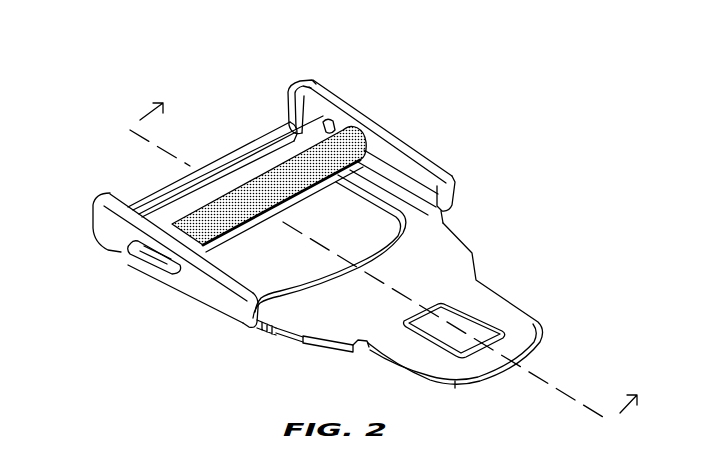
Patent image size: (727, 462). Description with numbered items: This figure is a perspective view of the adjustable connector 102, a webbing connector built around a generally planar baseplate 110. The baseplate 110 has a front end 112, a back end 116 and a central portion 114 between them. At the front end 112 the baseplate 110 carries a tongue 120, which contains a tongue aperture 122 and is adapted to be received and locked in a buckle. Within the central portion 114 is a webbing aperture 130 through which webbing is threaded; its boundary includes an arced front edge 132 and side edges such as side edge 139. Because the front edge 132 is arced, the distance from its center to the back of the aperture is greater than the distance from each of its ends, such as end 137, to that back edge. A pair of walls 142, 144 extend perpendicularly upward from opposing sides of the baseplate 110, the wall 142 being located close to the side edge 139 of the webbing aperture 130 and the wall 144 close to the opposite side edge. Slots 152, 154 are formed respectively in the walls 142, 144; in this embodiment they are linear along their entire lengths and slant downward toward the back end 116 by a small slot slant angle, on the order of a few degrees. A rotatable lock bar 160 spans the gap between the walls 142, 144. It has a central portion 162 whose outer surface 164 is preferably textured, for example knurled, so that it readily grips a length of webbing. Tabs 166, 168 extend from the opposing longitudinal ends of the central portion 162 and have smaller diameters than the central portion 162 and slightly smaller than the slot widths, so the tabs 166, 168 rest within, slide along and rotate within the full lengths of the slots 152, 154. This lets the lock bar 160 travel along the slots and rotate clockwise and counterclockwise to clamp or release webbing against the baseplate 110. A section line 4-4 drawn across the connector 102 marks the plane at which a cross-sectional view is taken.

The section line 4- 4 is at (375, 269).
The adjustable connector 102 is at (100, 130).
The baseplate 110 is at (477, 246).
The front end 112 is at (540, 343).
The central portion 114 is at (447, 224).
The back end 116 is at (237, 170).
The tongue 120 is at (520, 328).
The tongue aperture 122 is at (473, 328).
The webbing aperture 130 is at (345, 230).
The front edge 132 is at (343, 273).
The end of arced front edge 137 is at (390, 187).
The side edge 139 is at (373, 180).
The wall 142 is at (393, 131).
The wall 144 is at (119, 195).
The slot 152 is at (336, 121).
The slot 154 is at (123, 253).
The rotatable lock bar 160 is at (287, 170).
The central portion 162 is at (224, 224).
The outer surface 164 is at (291, 185).
The tab 166 is at (378, 112).
The tab 168 is at (157, 253).